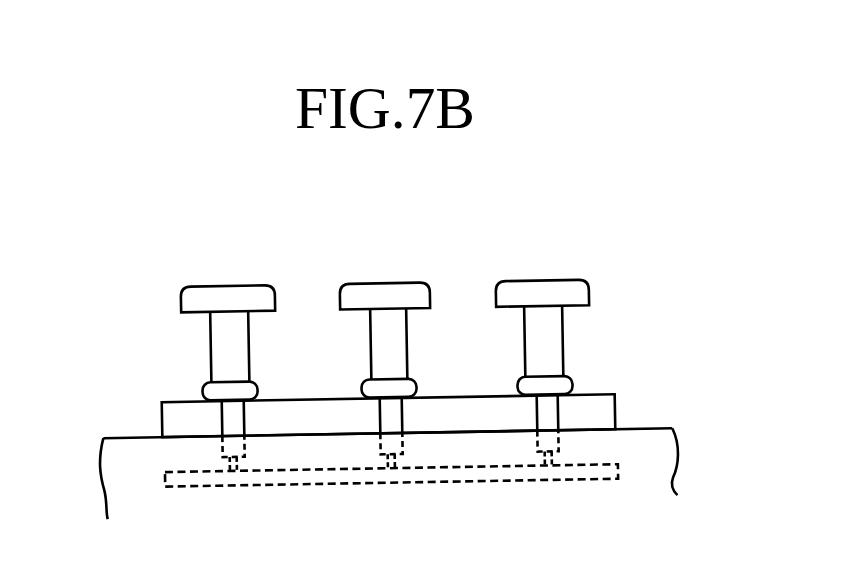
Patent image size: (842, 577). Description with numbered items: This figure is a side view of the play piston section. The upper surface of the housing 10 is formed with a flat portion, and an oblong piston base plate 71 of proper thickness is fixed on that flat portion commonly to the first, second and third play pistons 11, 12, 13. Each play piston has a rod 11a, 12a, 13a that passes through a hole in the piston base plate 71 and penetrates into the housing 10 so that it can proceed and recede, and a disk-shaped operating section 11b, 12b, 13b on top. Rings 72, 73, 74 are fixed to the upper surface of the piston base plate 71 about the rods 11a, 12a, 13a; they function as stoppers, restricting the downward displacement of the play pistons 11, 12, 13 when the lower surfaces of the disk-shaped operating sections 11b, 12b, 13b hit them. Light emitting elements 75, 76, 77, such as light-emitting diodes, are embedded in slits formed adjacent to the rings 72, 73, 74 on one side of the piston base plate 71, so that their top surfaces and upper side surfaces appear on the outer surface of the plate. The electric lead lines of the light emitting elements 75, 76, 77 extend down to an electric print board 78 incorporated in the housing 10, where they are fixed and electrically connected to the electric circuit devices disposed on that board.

The housing 10 is at (657, 426).
The first play piston 11 is at (246, 291).
The rod of first play piston 11a is at (250, 341).
The disk-shaped operating section of first play piston 11b is at (246, 286).
The second play piston 12 is at (403, 286).
The rod of second play piston 12a is at (408, 338).
The disk-shaped operating section of second play piston 12b is at (406, 284).
The third play piston 13 is at (563, 285).
The rod of third play piston 13a is at (565, 335).
The disk-shaped operating section of third play piston 13b is at (566, 281).
The piston base plate 71 is at (162, 419).
The ring 72 is at (203, 394).
The ring 73 is at (362, 392).
The ring 74 is at (520, 390).
The light emitting element 75 is at (233, 413).
The light emitting element 76 is at (392, 412).
The light emitting element 77 is at (547, 412).
The electric print board 78 is at (265, 485).